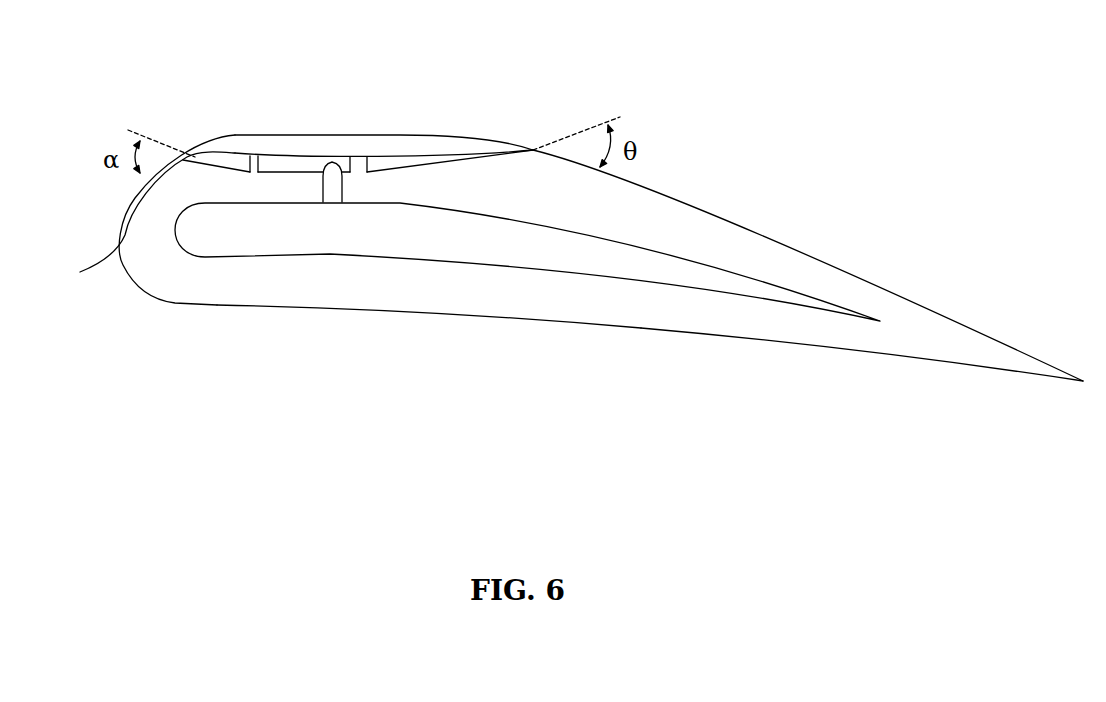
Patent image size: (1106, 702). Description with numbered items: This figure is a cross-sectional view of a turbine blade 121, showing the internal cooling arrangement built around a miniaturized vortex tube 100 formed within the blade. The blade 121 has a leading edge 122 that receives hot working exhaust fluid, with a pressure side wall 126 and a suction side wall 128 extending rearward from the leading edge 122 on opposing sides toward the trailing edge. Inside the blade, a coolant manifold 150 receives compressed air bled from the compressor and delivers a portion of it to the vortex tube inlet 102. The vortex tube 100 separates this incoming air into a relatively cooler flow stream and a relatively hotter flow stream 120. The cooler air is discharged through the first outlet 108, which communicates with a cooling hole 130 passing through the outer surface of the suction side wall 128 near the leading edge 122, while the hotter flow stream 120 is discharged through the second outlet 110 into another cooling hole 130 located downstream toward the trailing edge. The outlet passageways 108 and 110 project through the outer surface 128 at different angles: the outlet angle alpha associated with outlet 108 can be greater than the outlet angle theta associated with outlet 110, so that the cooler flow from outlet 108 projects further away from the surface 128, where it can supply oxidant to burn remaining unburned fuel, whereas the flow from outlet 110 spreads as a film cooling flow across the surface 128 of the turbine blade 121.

The vortex tube 100 is at (332, 154).
The vortex tube inlet 102 is at (333, 196).
The first vortex tube outlet 108 is at (138, 219).
The second vortex tube outlet 110 is at (530, 148).
The relatively hotter flow stream 120 is at (392, 308).
The turbine blade 121 is at (752, 92).
The leading edge 122 is at (137, 287).
The pressure side wall 126 is at (646, 328).
The suction side wall 128 is at (690, 200).
The cooling hole 130 is at (217, 162).
The coolant manifold 150 is at (668, 275).